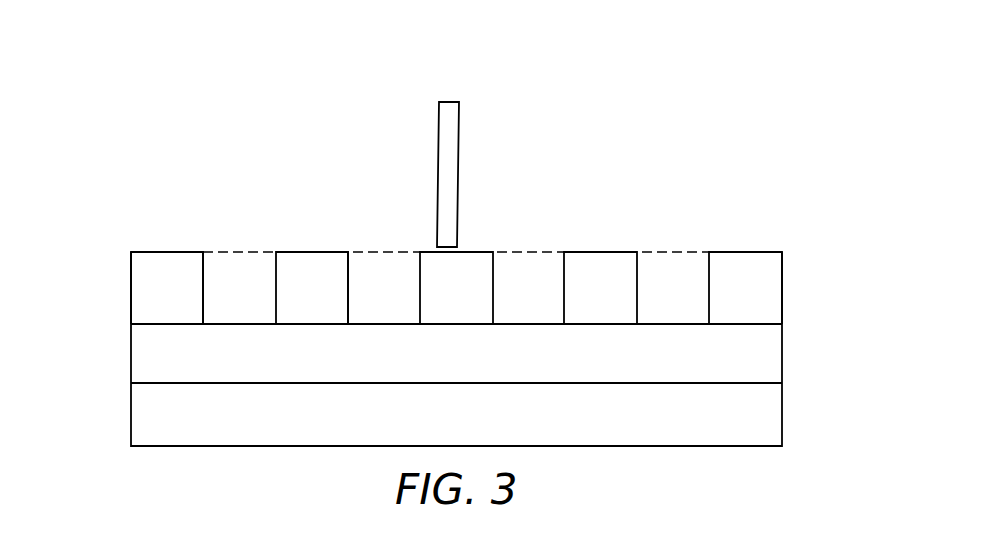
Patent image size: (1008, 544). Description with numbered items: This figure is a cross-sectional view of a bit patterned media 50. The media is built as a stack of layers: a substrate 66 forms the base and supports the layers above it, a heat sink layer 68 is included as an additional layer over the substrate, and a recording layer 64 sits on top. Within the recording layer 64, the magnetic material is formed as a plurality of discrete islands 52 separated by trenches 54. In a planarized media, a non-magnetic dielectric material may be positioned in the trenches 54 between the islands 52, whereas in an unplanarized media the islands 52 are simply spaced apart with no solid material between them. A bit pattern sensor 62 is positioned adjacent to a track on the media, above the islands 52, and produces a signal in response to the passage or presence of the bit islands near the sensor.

The bit patterned media 50 is at (808, 355).
The islands 52 is at (295, 258).
The trenches 54 is at (522, 258).
The bit pattern sensor 62 is at (449, 138).
The recording layer 64 is at (120, 284).
The substrate 66 is at (148, 420).
The heat sink layer 68 is at (148, 357).